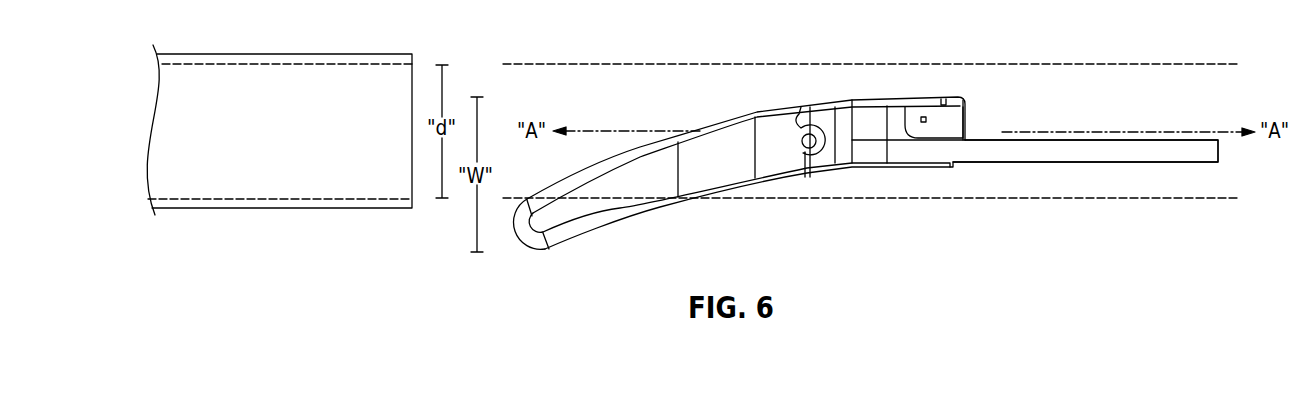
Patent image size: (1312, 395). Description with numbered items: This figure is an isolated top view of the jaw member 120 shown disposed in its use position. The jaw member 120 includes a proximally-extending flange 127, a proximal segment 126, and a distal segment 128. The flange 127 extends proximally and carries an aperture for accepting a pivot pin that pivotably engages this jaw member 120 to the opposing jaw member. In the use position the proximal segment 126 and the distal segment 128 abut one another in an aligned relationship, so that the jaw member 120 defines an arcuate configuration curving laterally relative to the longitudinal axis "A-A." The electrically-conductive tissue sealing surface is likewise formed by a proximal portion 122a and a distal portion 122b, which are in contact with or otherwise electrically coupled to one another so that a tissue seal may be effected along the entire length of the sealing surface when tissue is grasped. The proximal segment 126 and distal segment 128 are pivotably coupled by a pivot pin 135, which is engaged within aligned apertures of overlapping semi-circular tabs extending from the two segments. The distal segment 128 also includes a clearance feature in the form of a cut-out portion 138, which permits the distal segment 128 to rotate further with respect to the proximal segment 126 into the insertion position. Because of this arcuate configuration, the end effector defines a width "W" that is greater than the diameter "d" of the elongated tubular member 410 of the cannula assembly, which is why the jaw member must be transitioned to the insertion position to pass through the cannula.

The elongated tubular member 410 is at (297, 53).
The jaw member 120 is at (987, 99).
The proximal portion of sealing surface 122a is at (832, 124).
The distal portion of sealing surface 122b is at (707, 168).
The proximal segment 126 is at (871, 167).
The proximally-extending flange 127 is at (998, 148).
The distal segment 128 is at (632, 188).
The pivot pin 135 is at (821, 150).
The cut-out portion 138 is at (798, 108).